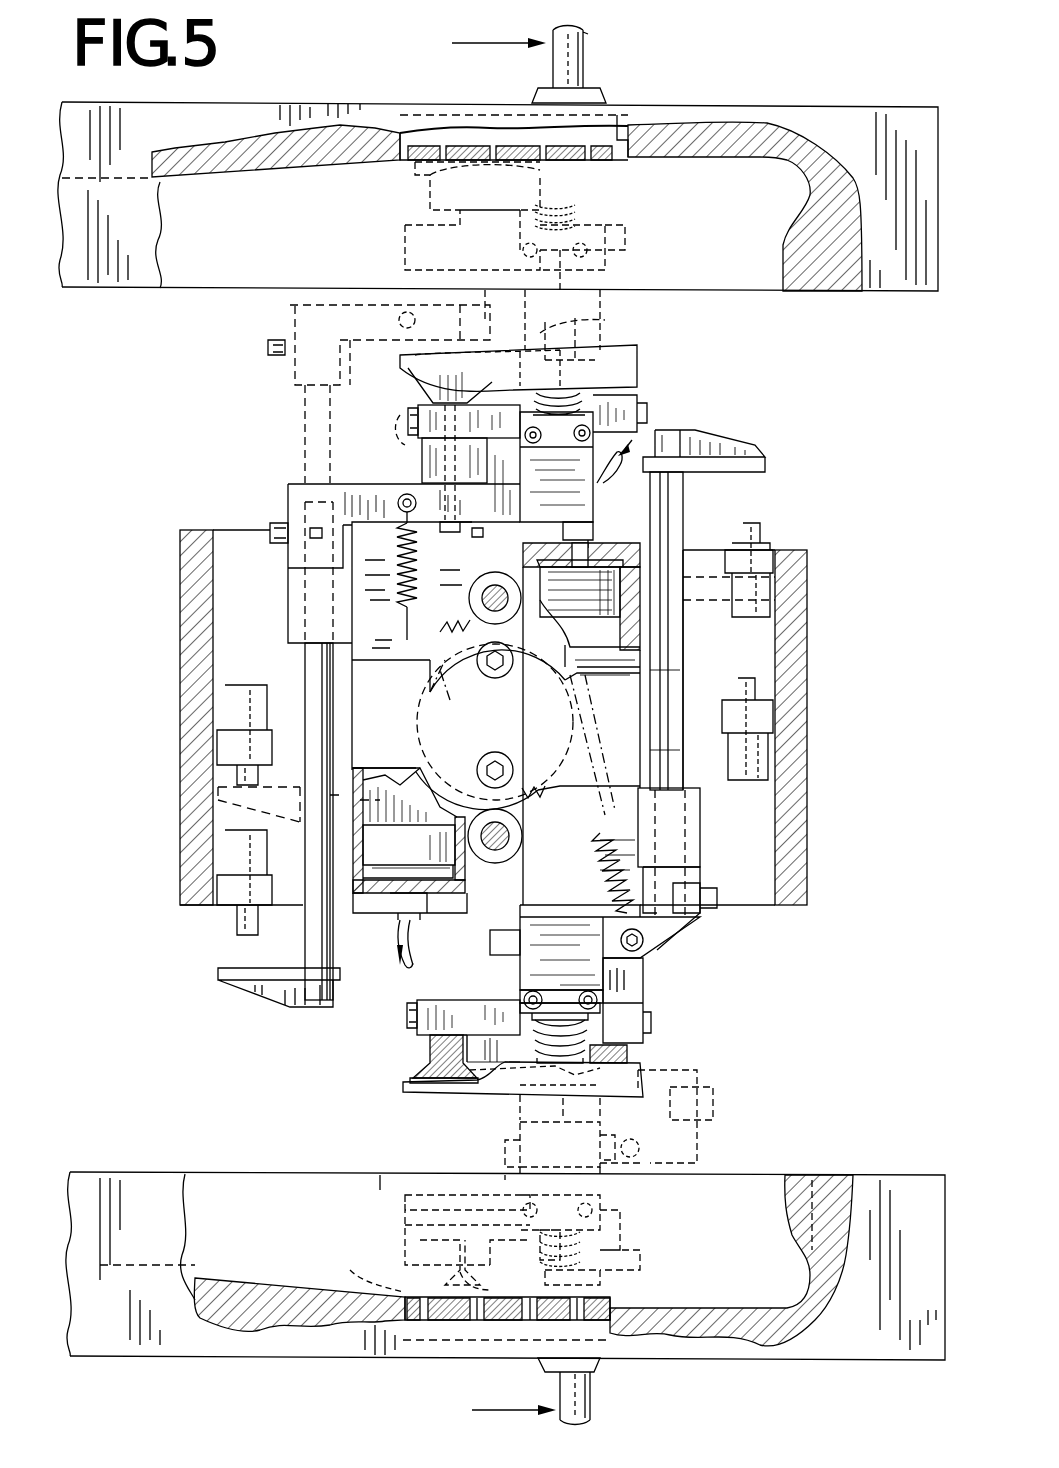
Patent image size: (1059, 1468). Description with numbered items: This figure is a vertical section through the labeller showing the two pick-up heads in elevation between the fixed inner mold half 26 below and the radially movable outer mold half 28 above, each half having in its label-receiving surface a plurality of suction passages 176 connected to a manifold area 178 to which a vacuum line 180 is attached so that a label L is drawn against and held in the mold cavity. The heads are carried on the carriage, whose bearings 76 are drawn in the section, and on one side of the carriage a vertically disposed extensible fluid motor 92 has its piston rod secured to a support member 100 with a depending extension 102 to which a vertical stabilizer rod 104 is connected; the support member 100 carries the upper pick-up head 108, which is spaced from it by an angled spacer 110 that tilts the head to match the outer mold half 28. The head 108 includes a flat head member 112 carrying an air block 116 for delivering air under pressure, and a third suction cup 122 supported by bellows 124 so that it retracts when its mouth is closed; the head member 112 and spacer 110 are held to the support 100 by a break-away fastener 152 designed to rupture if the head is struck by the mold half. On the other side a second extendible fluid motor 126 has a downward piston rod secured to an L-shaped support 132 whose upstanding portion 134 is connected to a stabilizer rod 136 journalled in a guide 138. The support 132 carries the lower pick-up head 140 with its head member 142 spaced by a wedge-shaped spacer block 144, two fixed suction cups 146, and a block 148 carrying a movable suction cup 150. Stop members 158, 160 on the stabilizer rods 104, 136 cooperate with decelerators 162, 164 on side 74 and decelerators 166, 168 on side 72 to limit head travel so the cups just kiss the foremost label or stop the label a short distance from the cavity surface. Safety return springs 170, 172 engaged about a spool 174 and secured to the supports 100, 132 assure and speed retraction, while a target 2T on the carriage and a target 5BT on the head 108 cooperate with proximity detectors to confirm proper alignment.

The fixed inner mold half 26 is at (862, 1360).
The radially movable outer mold half 28 is at (85, 292).
The side of the support frame 72 is at (800, 628).
The side of the support frame 74 is at (195, 578).
The shaft bearings 76 is at (495, 598).
The extensible fluid motor 92 is at (368, 900).
The support member 100 is at (292, 315).
The depending extension 102 is at (295, 556).
The vertical stabilizer rod 104 is at (318, 965).
The upper pick-up head 108 is at (648, 213).
The spacer 110 is at (430, 458).
The head member 112 is at (440, 405).
The air block 116 is at (628, 1052).
The third suction cup 122 is at (607, 320).
The bellows 124 is at (618, 370).
The second extendible fluid motor 126 is at (622, 525).
The L-shaped support 132 is at (490, 940).
The upstanding portion 134 is at (700, 875).
The stabilizer rod 136 is at (672, 497).
The guide 138 is at (690, 815).
The lower pick-up head 140 is at (395, 1045).
The head member 142 is at (440, 1010).
The spacer block 144 is at (633, 980).
The fixed suction cups 146 is at (430, 1055).
The block 148 is at (585, 962).
The movable suction cup 150 is at (595, 1035).
The break-away fastener 152 is at (400, 425).
The stop member 158 is at (248, 985).
The stop member 160 is at (720, 440).
The decelerator 162 is at (220, 708).
The decelerator 164 is at (220, 848).
The decelerator 166 is at (755, 590).
The decelerator 168 is at (757, 760).
The safety return spring 170 is at (398, 595).
The safety return spring 172 is at (600, 880).
The spool 174 is at (455, 680).
The suction passages 176 is at (400, 165).
The manifold area 178 is at (618, 130).
The vacuum line 180 is at (590, 46).
The target 2T is at (478, 540).
The target 5BT is at (315, 530).
The label L is at (620, 178).